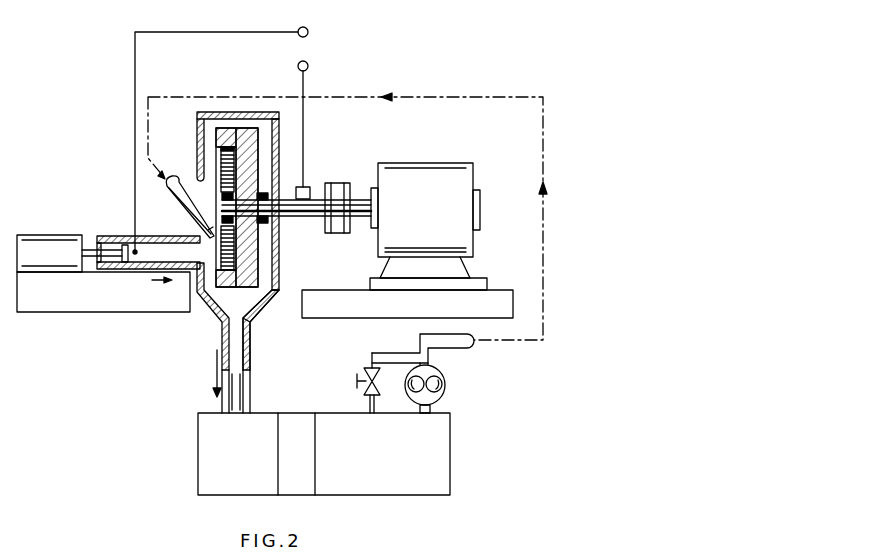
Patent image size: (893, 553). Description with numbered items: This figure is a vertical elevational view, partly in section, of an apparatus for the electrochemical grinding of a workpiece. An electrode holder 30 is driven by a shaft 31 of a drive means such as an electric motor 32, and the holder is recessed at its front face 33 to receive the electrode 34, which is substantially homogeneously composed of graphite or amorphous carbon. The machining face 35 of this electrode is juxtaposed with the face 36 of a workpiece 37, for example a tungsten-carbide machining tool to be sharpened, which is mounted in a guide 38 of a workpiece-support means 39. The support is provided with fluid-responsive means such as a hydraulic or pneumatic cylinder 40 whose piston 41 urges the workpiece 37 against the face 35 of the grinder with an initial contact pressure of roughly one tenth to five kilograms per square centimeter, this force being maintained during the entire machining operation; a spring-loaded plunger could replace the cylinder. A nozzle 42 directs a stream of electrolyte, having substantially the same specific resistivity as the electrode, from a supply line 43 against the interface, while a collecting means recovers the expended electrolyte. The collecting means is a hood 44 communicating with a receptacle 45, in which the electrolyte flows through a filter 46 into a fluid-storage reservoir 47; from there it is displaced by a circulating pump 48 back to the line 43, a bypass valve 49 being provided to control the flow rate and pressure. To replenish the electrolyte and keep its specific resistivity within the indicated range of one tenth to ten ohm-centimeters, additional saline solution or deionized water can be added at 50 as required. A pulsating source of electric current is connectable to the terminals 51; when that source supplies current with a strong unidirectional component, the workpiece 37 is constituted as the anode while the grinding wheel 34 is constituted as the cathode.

The electrode holder 30 is at (243, 287).
The shaft 31 is at (283, 215).
The electric motor 32 is at (442, 165).
The front face 33 is at (277, 246).
The electrode 34 is at (214, 276).
The machining face 35 is at (226, 160).
The face of workpiece 36 is at (205, 293).
The workpiece 37 is at (147, 266).
The guide 38 is at (121, 236).
The workpiece-support means 39 is at (52, 312).
The hydraulic or pneumatic cylinder 40 is at (70, 240).
The piston 41 is at (99, 268).
The nozzle 42 is at (186, 204).
The supply line 43 is at (543, 293).
The hood 44 is at (248, 345).
The receptacle 45 is at (203, 437).
The filter 46 is at (290, 488).
The fluid-storage reservoir 47 is at (414, 492).
The pump 48 is at (443, 379).
The bypass valve 49 is at (363, 370).
The replenishing inlet 50 is at (452, 414).
The terminals 51 is at (320, 28).